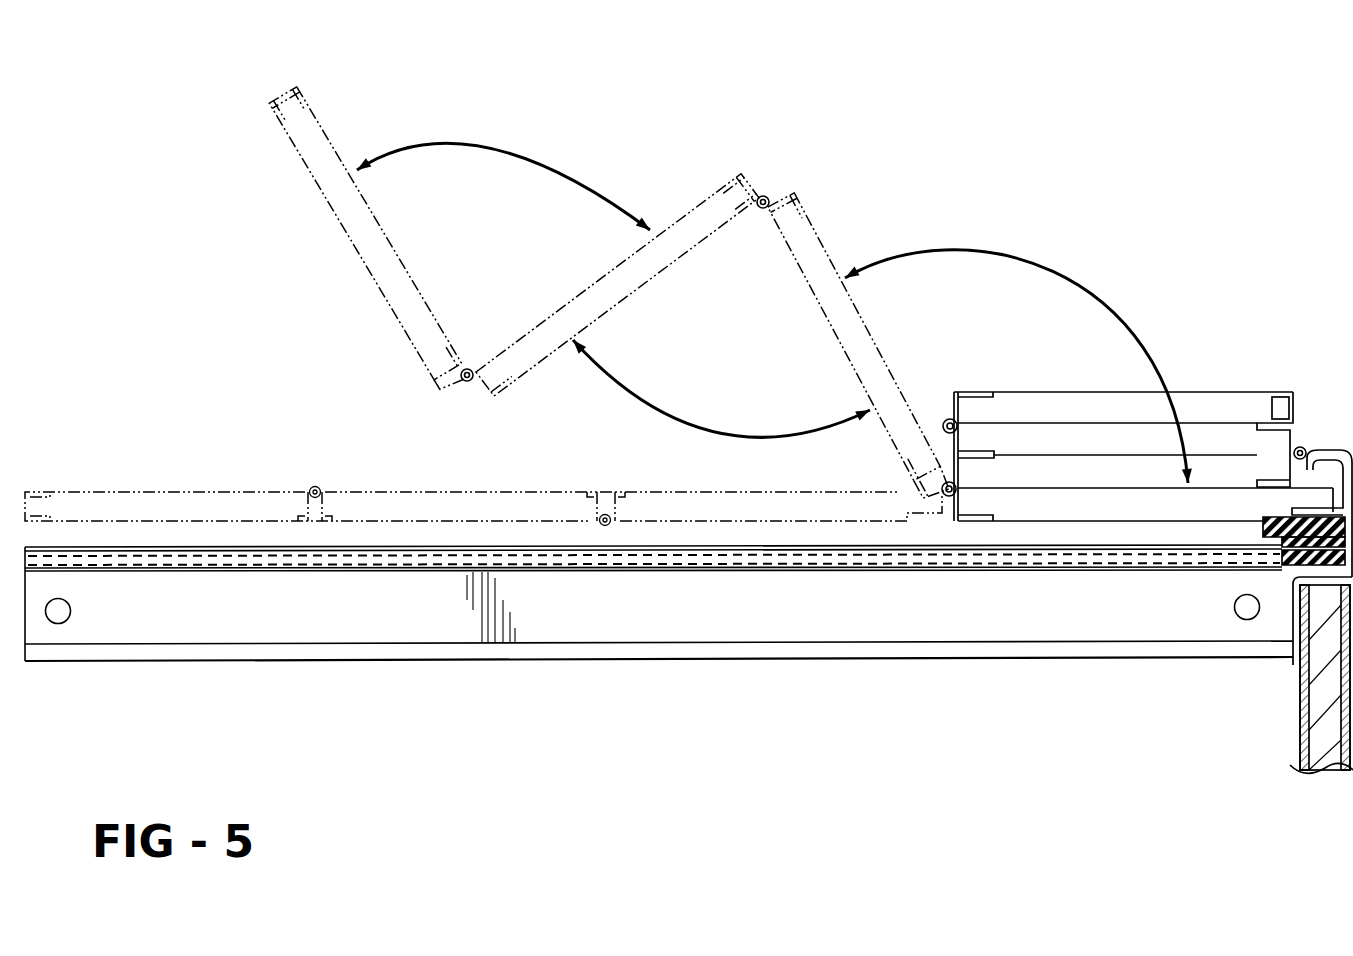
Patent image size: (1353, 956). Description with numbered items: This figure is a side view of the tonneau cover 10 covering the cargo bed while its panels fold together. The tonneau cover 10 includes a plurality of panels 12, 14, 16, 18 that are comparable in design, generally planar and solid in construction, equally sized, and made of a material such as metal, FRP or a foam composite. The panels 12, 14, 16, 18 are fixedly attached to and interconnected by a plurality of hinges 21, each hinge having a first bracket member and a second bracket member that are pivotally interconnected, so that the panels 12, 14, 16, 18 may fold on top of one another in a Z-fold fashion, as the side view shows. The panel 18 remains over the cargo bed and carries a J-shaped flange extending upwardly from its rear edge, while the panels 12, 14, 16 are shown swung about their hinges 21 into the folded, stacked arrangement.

The tonneau cover 10 is at (1032, 177).
The panel 12 is at (320, 176).
The panel 14 is at (680, 256).
The panel 16 is at (825, 248).
The panel 18 is at (1227, 497).
The hinge 21 is at (763, 195).